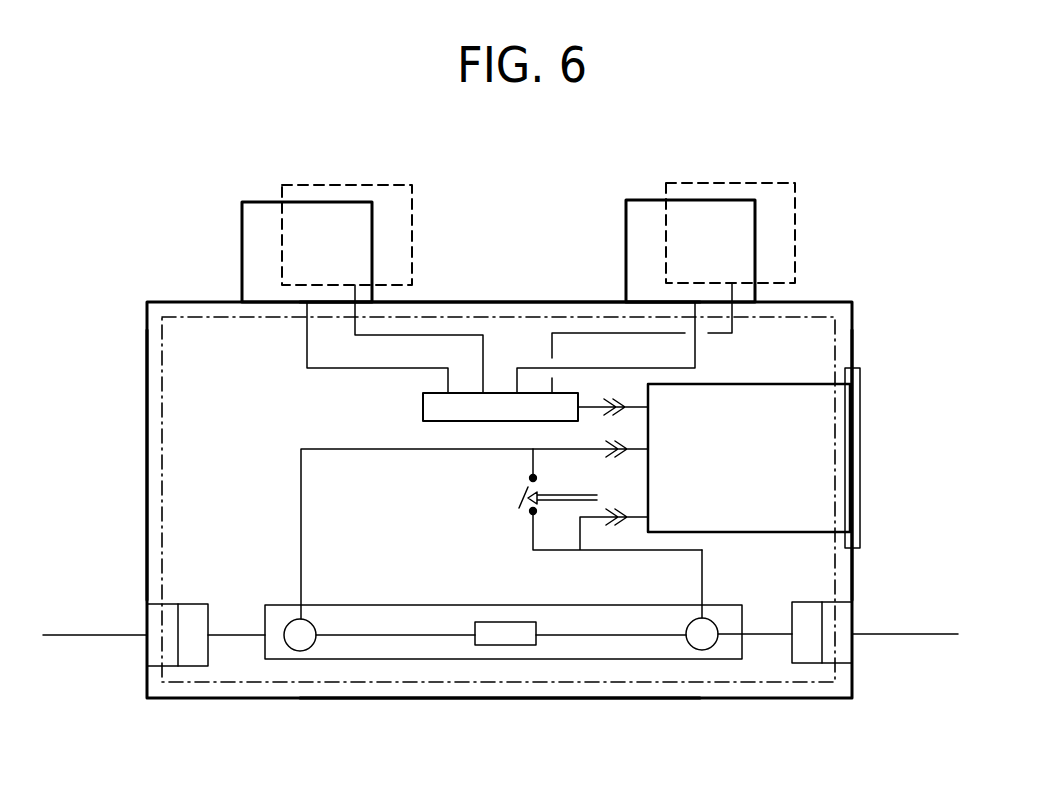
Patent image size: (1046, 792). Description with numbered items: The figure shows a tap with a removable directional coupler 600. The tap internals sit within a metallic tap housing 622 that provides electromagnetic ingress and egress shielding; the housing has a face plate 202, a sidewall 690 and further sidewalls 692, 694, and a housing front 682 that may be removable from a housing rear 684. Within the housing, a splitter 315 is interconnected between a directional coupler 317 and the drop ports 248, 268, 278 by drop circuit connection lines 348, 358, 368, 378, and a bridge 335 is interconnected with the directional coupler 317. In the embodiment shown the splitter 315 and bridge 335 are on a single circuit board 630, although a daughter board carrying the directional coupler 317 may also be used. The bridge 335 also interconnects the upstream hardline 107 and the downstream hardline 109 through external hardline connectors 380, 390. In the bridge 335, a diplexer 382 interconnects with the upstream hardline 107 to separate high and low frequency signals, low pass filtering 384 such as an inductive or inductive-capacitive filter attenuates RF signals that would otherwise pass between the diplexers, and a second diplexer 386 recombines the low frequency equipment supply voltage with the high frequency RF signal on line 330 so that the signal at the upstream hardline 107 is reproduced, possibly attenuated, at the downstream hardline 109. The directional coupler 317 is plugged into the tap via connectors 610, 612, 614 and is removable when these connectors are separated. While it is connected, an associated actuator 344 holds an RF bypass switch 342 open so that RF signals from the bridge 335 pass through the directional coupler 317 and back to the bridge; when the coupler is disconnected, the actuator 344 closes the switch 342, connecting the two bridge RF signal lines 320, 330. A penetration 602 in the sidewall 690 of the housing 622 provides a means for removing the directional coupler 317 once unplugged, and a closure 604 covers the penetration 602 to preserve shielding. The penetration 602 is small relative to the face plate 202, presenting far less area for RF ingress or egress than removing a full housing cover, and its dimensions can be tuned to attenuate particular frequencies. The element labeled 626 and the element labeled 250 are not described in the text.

The tap with a removable directional coupler 600 is at (803, 146).
The housing face plate 202 is at (812, 298).
The sidewall 694 is at (455, 300).
The sidewall 690 is at (853, 335).
The sidewall 692 is at (143, 357).
The bottom wall 626 is at (397, 702).
The circuit board 630 is at (482, 682).
The housing front 682 is at (180, 517).
The housing rear 684 is at (150, 557).
The drop port 248 is at (242, 275).
The first antenna 250 is at (412, 202).
The drop port 268 is at (625, 270).
The drop port 278 is at (795, 267).
The drop circuit connection line 348 is at (305, 353).
The drop circuit connection line 358 is at (422, 337).
The drop circuit connection line 368 is at (583, 367).
The drop circuit connection line 378 is at (720, 335).
The splitter 315 is at (420, 405).
The directional coupler 317 is at (810, 518).
The connector 610 is at (627, 420).
The connector 612 is at (613, 462).
The connector 614 is at (627, 522).
The bridge RF signal line 320 is at (304, 563).
The RF bypass switch 342 is at (503, 508).
The actuator 344 is at (550, 498).
The closure 604 is at (855, 388).
The penetration 602 is at (857, 513).
The tap housing 622 is at (855, 572).
The bridge 335 is at (428, 603).
The diplexer 382 is at (305, 633).
The low pass filtering 384 is at (502, 625).
The diplexer 386 is at (718, 617).
The bridge RF signal line 330 is at (702, 590).
The external hardline connector 380 is at (192, 658).
The external hardline connector 390 is at (802, 663).
The upstream hardline 107 is at (65, 637).
The downstream hardline 109 is at (883, 635).